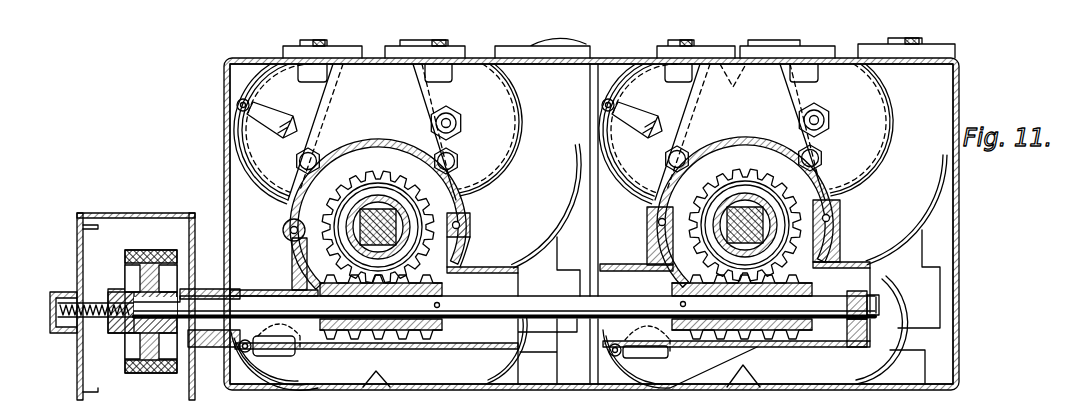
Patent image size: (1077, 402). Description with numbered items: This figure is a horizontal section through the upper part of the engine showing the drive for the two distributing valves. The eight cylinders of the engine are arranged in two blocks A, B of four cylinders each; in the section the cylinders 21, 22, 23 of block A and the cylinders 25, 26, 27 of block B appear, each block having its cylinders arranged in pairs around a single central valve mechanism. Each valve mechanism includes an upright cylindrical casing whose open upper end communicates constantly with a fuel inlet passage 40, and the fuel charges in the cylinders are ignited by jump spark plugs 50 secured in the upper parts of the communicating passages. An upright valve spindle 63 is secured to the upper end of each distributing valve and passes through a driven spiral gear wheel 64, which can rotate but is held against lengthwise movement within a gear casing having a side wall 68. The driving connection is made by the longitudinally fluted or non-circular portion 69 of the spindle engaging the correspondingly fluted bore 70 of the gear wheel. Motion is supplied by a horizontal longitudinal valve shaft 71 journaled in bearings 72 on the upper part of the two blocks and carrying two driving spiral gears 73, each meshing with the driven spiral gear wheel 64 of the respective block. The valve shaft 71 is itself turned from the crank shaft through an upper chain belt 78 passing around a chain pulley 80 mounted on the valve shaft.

The cylinder 21 is at (250, 186).
The cylinder 22 is at (510, 371).
The cylinder 23 is at (516, 162).
The cylinder 25 is at (638, 134).
The cylinder 26 is at (885, 370).
The cylinder 27 is at (887, 151).
The fuel inlet passage 40 is at (393, 104).
The jump spark plug 50 is at (248, 355).
The valve spindle 63 is at (400, 219).
The driven spiral gear wheel 64 is at (372, 200).
The side wall of gear casing 68 is at (290, 208).
The fluted portion of valve spindle 69 is at (377, 196).
The fluted bore 70 is at (297, 250).
The valve shaft 71 is at (557, 307).
The bearing 72 is at (300, 289).
The driving spiral gear 73 is at (401, 347).
The upper chain belt 78 is at (137, 248).
The chain pulley 80 is at (138, 286).
The cylinder block A is at (535, 275).
The cylinder block B is at (904, 277).